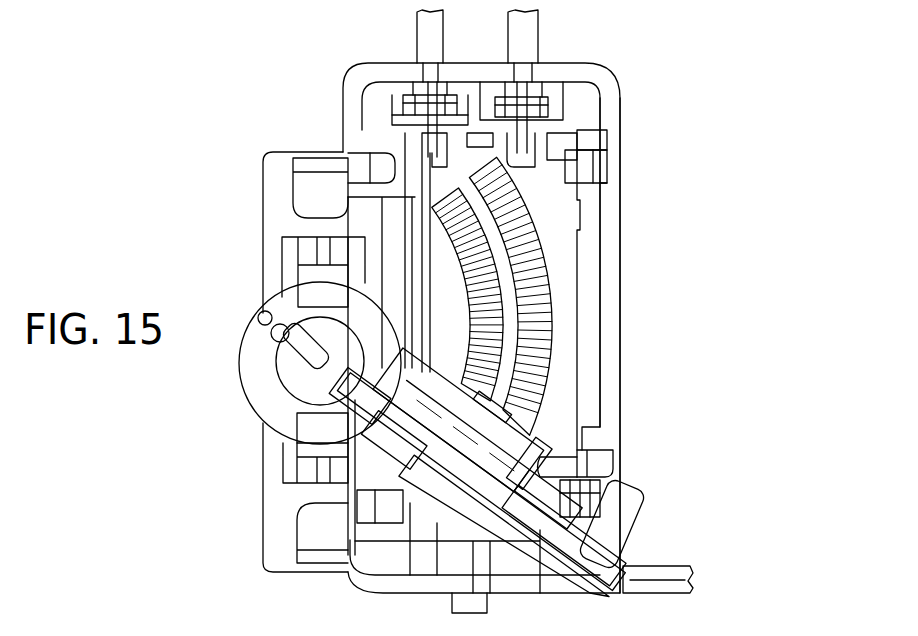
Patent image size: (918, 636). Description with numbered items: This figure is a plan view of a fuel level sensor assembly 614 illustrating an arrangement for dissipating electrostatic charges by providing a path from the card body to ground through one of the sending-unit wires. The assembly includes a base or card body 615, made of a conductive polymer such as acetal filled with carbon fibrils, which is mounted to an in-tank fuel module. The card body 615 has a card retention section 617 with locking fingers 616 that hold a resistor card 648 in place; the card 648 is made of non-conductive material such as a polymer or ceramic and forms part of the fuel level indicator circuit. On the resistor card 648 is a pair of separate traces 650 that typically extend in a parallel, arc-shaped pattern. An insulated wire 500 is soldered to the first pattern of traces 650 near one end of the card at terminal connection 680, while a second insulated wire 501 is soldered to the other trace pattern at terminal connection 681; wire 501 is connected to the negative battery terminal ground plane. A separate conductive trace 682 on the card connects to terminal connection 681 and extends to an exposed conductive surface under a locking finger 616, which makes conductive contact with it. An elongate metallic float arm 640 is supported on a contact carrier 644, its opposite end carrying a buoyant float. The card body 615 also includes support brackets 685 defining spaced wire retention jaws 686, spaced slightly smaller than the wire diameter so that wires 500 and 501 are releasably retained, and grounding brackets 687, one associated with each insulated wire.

The insulated wire 500 is at (538, 30).
The insulated wire 501 is at (417, 33).
The fuel level sensor assembly 614 is at (632, 280).
The card body 615 is at (624, 211).
The locking fingers 616 is at (478, 133).
The card retention section 617 is at (622, 318).
The float arm 640 is at (660, 566).
The contact carrier 644 is at (560, 422).
The resistor card 648 is at (588, 268).
The traces 650 is at (300, 296).
The terminal connection 680 is at (523, 152).
The terminal connection 681 is at (415, 143).
The conductive trace 682 is at (432, 246).
The support brackets 685 is at (443, 63).
The wire retention jaws 686 is at (417, 63).
The grounding brackets 687 is at (392, 94).